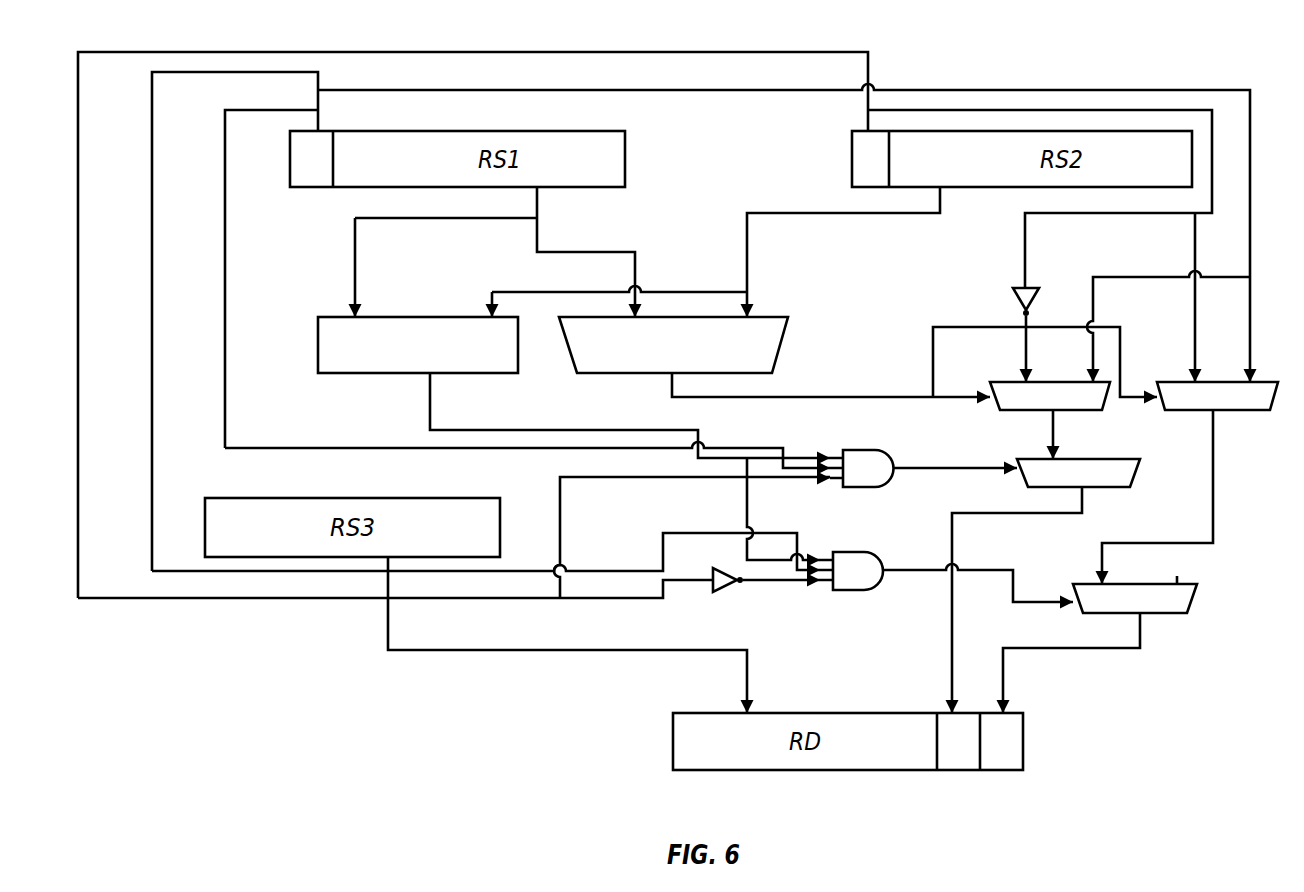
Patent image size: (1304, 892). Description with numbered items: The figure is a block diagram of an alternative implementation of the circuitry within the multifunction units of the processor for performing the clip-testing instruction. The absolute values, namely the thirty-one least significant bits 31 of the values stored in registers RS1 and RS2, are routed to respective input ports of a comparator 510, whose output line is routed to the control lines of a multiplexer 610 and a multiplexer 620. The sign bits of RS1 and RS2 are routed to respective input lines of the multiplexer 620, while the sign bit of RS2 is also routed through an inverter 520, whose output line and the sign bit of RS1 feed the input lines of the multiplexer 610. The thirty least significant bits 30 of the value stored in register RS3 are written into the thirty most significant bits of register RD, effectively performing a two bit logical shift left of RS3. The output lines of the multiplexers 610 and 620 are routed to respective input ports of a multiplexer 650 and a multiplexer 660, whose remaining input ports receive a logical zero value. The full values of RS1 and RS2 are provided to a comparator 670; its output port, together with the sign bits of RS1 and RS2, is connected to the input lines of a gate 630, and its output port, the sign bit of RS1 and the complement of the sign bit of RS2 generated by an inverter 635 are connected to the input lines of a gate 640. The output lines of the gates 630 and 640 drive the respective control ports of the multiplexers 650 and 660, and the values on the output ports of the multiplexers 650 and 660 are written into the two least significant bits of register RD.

The LSBs of register RS3 30 is at (510, 638).
The LSBs of registers RS1 and RS2 31 is at (593, 240).
The comparator 510 is at (571, 357).
The inverter 520 is at (1072, 298).
The multiplexer 610 is at (998, 411).
The multiplexer 620 is at (1262, 411).
The gate 630 is at (887, 488).
The inverter 635 is at (738, 586).
The gate 640 is at (877, 591).
The multiplexer 650 is at (1113, 488).
The multiplexer 660 is at (1178, 614).
The comparator 670 is at (355, 374).